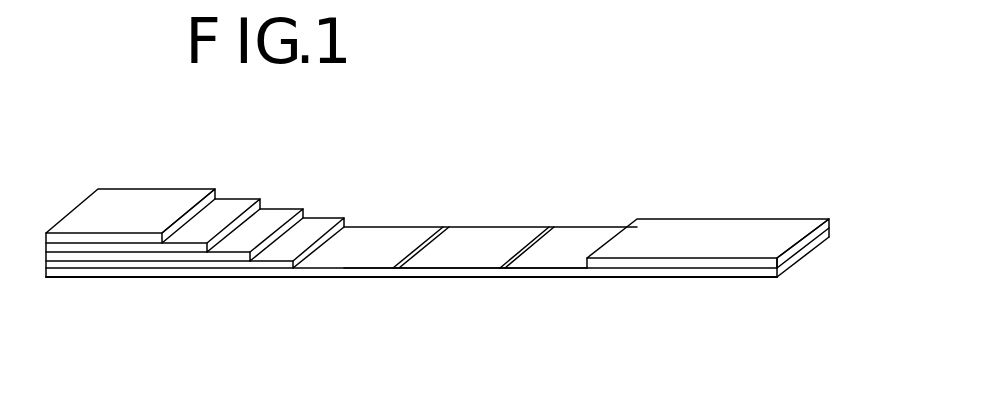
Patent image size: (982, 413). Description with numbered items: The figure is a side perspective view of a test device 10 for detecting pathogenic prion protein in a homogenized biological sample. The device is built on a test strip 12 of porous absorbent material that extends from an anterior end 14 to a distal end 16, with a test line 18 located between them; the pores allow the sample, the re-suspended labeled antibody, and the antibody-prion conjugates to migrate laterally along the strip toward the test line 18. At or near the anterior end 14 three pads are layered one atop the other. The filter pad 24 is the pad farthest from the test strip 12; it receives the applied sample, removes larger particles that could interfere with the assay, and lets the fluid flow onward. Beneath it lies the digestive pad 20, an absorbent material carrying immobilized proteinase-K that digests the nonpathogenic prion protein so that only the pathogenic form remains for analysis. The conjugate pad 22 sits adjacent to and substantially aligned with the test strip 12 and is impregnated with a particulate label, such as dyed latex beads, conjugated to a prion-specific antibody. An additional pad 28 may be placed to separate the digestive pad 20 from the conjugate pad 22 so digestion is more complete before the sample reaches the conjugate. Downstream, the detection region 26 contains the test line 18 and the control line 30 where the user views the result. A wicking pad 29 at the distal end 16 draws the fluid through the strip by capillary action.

The test device 10 is at (690, 135).
The test strip 12 is at (784, 278).
The anterior end 14 is at (45, 277).
The distal end 16 is at (833, 233).
The test line 18 is at (442, 227).
The digestive pad 20 is at (190, 235).
The conjugate pad 22 is at (325, 223).
The filter pad 24 is at (115, 202).
The detection region 26 is at (467, 252).
The reagent layer 28 is at (245, 225).
The wicking pad 29 is at (802, 222).
The control line 30 is at (547, 227).